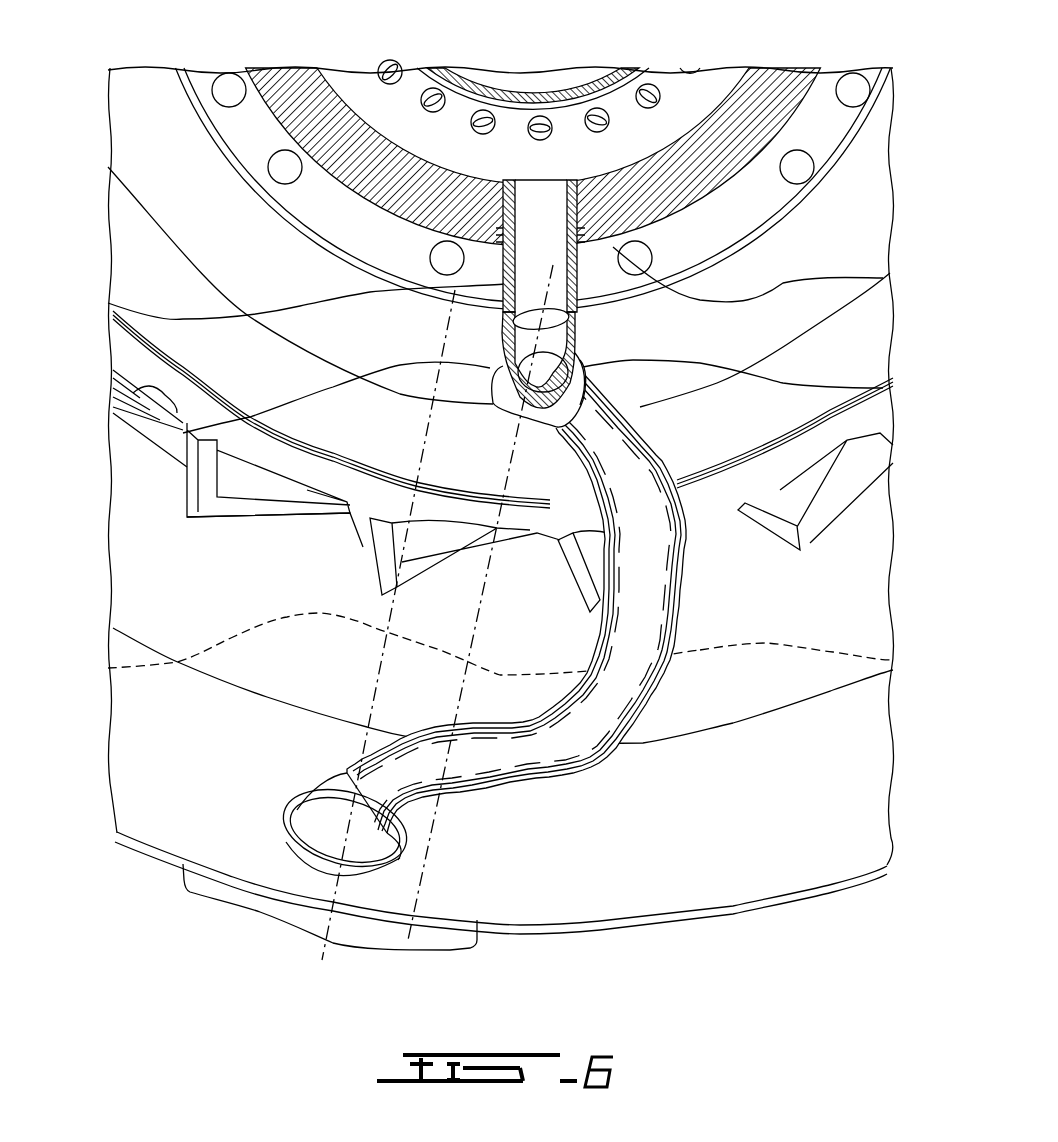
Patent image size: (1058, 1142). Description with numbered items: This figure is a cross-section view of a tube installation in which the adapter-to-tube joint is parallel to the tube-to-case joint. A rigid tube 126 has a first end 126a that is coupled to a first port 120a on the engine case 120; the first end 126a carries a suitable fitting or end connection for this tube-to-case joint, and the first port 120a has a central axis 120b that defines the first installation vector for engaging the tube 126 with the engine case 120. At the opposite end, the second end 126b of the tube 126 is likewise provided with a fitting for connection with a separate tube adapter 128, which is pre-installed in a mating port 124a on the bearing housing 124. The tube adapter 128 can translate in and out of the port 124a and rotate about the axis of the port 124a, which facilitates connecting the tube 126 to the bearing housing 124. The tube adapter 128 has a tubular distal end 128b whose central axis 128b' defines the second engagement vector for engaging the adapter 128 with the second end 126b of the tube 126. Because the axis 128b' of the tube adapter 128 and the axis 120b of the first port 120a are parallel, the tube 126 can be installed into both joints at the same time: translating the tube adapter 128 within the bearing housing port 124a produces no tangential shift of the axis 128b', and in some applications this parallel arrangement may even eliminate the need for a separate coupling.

The engine case 120 is at (555, 880).
The first port 120a is at (343, 795).
The central axis 120b is at (108, 668).
The bearing housing 124 is at (883, 278).
The port 124a is at (514, 185).
The rigid tube 126 is at (653, 600).
The first end 126a is at (318, 820).
The second end 126b is at (883, 388).
The tube adapter 128 is at (125, 312).
The tubular distal end 128b is at (469, 461).
The central axis 128b' is at (831, 658).